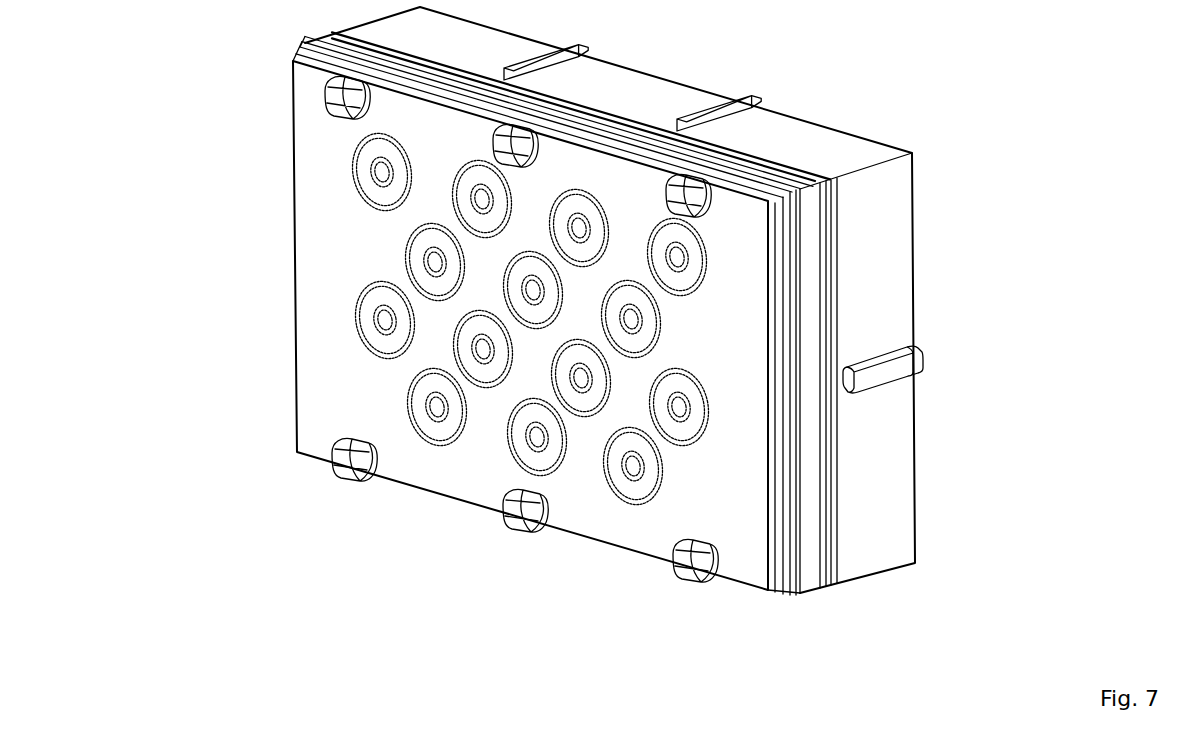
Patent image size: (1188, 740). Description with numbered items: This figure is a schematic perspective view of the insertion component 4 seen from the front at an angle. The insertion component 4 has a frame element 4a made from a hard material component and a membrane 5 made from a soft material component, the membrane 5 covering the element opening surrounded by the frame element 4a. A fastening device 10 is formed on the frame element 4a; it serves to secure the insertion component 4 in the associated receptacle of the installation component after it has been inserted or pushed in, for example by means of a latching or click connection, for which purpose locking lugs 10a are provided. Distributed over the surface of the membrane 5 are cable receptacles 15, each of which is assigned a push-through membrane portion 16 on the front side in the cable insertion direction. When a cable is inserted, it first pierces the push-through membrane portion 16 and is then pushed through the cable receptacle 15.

The insertion component 4 is at (875, 460).
The frame element 4a is at (873, 222).
The membrane 5 is at (737, 517).
The fastening device 10 is at (510, 512).
The front locking lug 10a is at (343, 97).
The cable receptacle 15 is at (433, 430).
The push-through membrane portion 16 is at (390, 326).